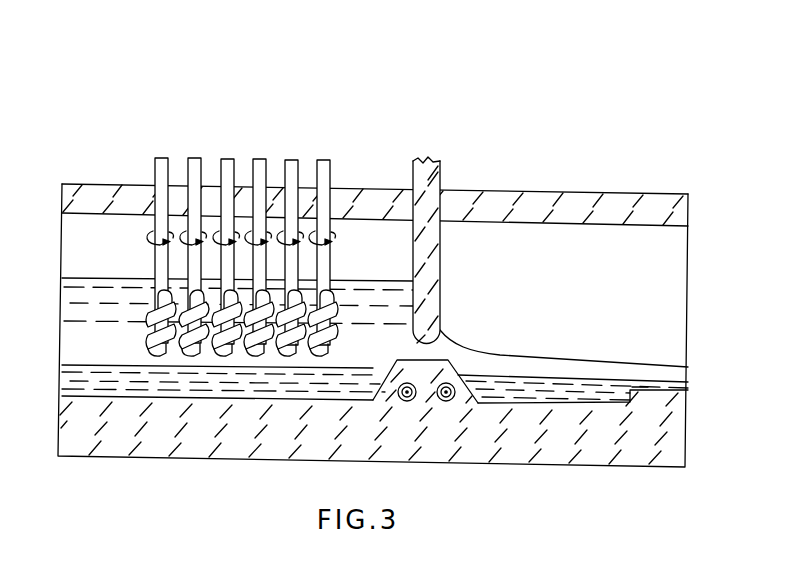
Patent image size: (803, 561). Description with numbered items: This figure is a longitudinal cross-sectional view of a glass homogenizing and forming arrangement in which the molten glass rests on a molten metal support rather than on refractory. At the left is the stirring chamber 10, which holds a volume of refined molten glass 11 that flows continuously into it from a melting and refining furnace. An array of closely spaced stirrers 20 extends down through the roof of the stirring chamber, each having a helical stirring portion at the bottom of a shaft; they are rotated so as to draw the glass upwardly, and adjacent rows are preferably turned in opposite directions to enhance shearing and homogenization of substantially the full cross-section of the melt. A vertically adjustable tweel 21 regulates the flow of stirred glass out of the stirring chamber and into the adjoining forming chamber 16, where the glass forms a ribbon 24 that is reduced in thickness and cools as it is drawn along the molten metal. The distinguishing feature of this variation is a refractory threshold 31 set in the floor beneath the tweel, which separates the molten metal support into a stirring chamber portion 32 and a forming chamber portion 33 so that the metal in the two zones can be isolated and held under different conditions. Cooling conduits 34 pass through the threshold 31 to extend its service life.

The stirring chamber 10 is at (113, 181).
The refined molten glass 11 is at (101, 281).
The forming chamber 16 is at (594, 190).
The stirrers 20 is at (256, 158).
The tweel 21 is at (441, 250).
The ribbon 24 is at (613, 362).
The refractory threshold 31 is at (403, 359).
The stirring chamber portion 32 is at (112, 365).
The forming chamber portion 33 is at (532, 372).
The cooling conduits 34 is at (414, 400).